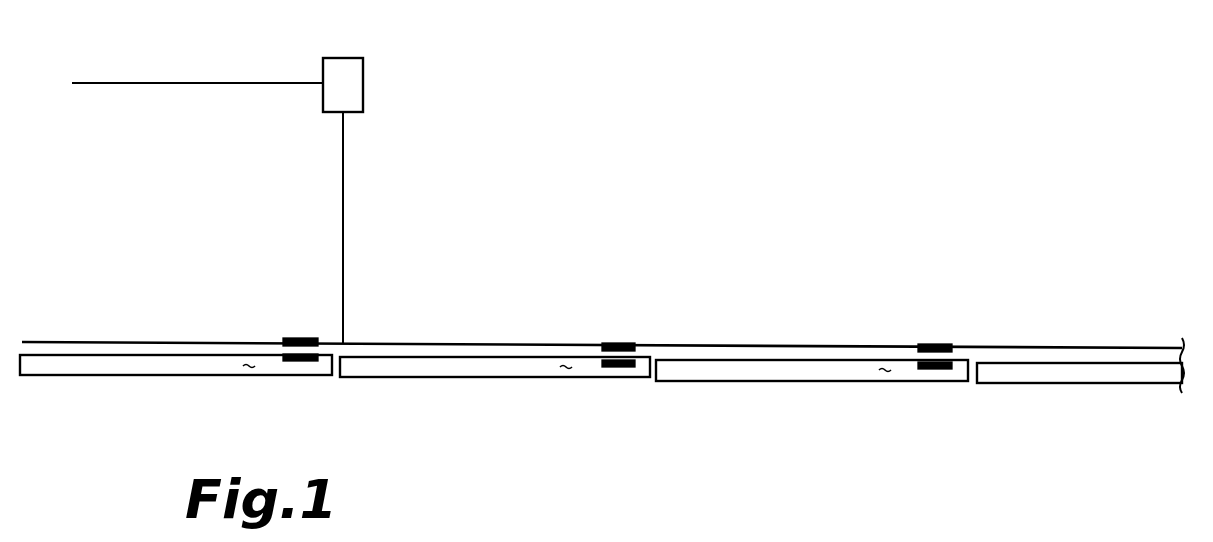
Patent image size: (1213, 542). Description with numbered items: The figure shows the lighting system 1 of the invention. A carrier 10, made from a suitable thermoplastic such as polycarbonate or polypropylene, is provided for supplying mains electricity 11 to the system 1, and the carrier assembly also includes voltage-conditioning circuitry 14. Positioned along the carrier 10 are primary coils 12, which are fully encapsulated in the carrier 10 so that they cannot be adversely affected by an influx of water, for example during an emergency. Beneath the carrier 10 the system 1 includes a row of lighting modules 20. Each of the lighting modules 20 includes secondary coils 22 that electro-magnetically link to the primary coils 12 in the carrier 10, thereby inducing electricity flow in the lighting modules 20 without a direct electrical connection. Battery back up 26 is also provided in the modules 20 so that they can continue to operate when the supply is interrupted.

The lighting system 1 is at (433, 236).
The carrier 10 is at (508, 345).
The mains electricity 11 is at (228, 83).
The primary coils 12 is at (302, 340).
The voltage-conditioning circuitry 14 is at (353, 78).
The lighting modules 20 is at (453, 378).
The secondary coils 22 is at (298, 375).
The battery back up 26 is at (557, 378).